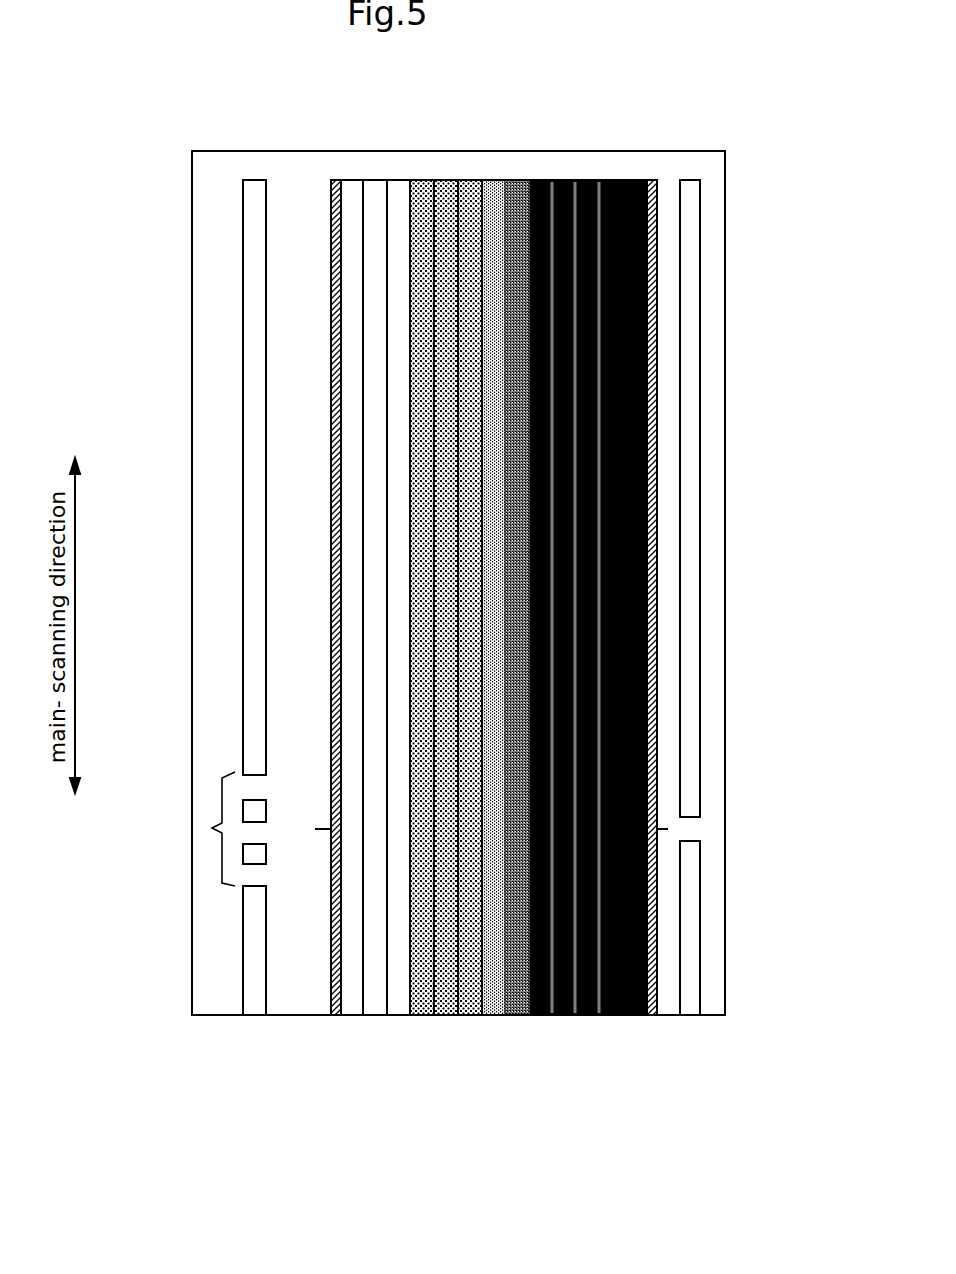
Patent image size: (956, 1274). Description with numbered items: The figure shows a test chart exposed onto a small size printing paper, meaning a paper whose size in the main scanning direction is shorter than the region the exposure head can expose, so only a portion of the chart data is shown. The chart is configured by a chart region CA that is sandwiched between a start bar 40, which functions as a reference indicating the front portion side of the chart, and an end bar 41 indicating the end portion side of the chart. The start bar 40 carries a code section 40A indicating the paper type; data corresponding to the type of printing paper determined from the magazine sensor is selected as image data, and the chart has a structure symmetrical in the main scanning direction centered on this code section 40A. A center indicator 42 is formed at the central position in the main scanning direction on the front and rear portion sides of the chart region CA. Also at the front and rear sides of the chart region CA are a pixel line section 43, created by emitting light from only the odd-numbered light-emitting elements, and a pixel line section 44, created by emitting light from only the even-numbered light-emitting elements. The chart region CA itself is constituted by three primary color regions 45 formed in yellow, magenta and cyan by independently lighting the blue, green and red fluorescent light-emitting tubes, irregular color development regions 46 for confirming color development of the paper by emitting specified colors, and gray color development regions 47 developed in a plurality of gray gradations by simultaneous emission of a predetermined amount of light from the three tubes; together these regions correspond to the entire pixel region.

The start bar 40 is at (243, 557).
The code section 40A is at (212, 828).
The end bar 41 is at (700, 633).
The center indicator 42 is at (322, 829).
The pixel line section 43 is at (332, 478).
The pixel line section 44 is at (657, 465).
The three primary color regions 45 is at (410, 180).
The irregular color development regions 46 is at (482, 180).
The gray color development regions 47 is at (648, 180).
The chart region CA is at (328, 1027).